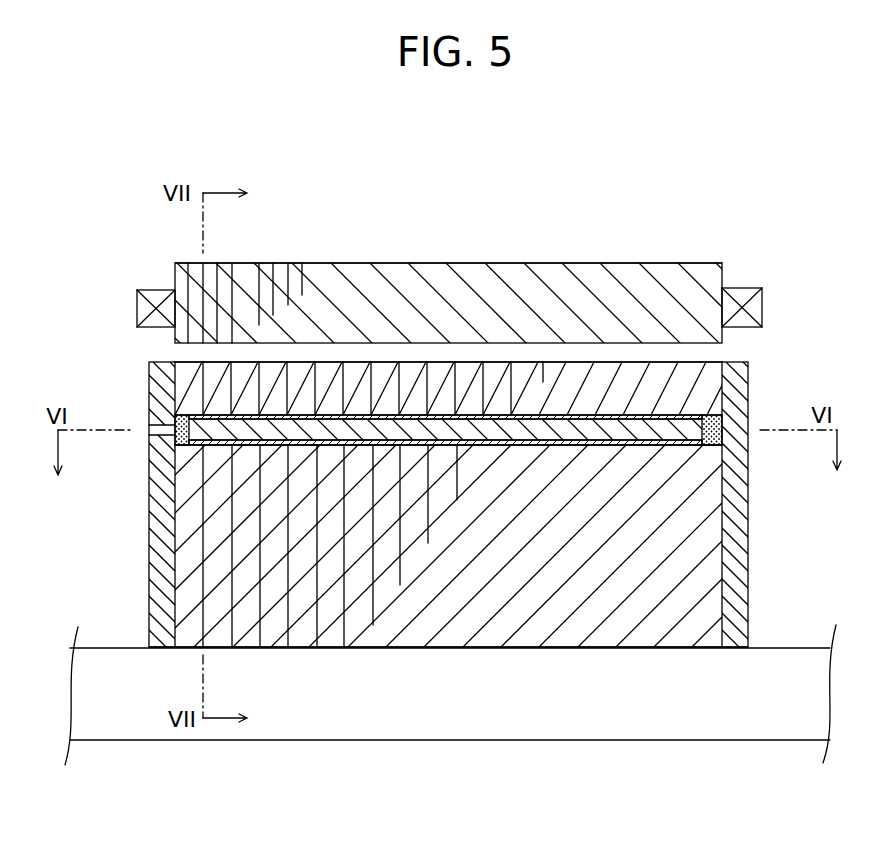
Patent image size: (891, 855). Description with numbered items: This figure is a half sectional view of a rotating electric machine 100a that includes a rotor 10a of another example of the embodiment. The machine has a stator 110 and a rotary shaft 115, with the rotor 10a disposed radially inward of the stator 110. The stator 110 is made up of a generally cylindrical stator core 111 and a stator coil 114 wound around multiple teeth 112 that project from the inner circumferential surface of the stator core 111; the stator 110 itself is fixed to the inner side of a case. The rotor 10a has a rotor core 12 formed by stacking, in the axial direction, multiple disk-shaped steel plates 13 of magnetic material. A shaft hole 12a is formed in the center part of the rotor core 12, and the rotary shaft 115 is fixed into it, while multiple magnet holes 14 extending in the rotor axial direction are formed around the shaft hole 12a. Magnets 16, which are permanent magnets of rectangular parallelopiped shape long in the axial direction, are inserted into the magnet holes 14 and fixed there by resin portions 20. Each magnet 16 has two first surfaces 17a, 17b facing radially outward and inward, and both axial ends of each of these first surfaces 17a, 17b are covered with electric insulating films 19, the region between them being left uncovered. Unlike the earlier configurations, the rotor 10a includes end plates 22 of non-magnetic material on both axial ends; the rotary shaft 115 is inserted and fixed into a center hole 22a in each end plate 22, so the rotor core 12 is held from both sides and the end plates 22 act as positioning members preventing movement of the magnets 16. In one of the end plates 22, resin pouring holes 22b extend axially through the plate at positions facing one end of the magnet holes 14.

The rotating electric machine 100a is at (719, 195).
The stator 110 is at (460, 255).
The stator core 111 is at (394, 263).
The teeth 112 is at (175, 335).
The stator coil 114 is at (741, 288).
The rotor 10a is at (756, 522).
The rotor core 12 is at (662, 551).
The shaft hole 12a is at (447, 648).
The steel plates 13 is at (308, 362).
The magnet holes 14 is at (527, 438).
The magnets 16 is at (625, 430).
The first surface 17a is at (580, 420).
The first surface 17b is at (575, 445).
The electric insulating films 19 is at (680, 415).
The resin portions 20 is at (708, 428).
The end plates 22 is at (139, 568).
The center hole 22a is at (162, 648).
The resin pouring holes 22b is at (165, 428).
The rotary shaft 115 is at (625, 705).